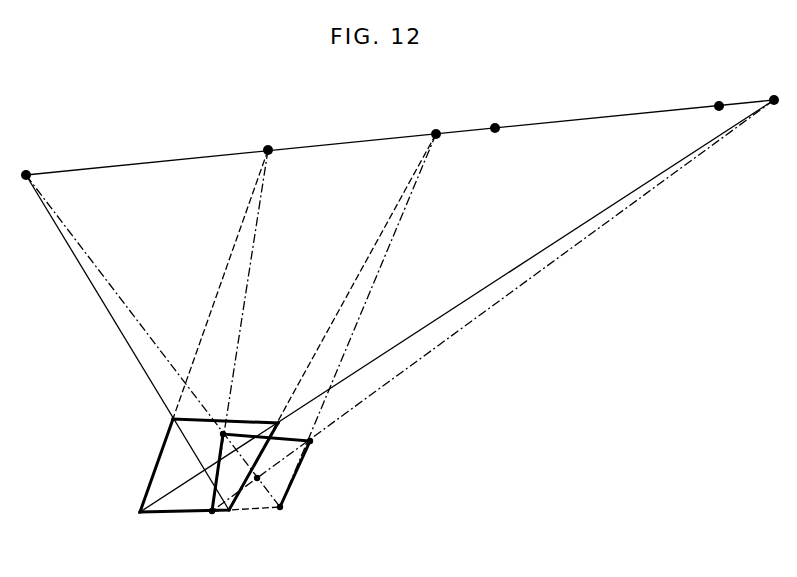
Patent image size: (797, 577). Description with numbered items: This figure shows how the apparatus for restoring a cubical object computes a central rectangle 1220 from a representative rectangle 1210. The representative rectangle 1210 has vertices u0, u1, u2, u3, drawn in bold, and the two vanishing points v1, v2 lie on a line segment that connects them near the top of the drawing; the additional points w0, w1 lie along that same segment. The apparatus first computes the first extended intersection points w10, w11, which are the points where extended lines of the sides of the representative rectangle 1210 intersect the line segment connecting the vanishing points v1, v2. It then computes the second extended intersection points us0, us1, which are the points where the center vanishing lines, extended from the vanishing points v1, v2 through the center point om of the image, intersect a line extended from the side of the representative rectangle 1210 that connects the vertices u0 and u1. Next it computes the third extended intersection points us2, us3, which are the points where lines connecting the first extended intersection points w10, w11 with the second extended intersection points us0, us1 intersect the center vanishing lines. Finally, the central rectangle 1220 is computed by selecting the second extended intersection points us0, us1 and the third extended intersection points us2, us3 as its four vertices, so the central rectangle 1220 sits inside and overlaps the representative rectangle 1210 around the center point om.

The representative rectangle 1210 is at (155, 471).
The central rectangle 1220 is at (296, 470).
The vanishing point v1 is at (780, 91).
The vanishing point v2 is at (17, 166).
The vanishing point w0 is at (492, 118).
The vanishing point w1 is at (717, 96).
The first extended intersection point w10 is at (265, 140).
The first extended intersection point w11 is at (433, 124).
The vertex of representative rectangle u0 is at (129, 520).
The vertex of representative rectangle u1 is at (237, 525).
The vertex of representative rectangle u2 is at (269, 417).
The vertex of representative rectangle u3 is at (162, 422).
The second extended intersection point us0 is at (199, 522).
The second extended intersection point us1 is at (280, 516).
The third extended intersection point us2 is at (324, 448).
The third extended intersection point us3 is at (206, 437).
The center point of the image om is at (269, 484).